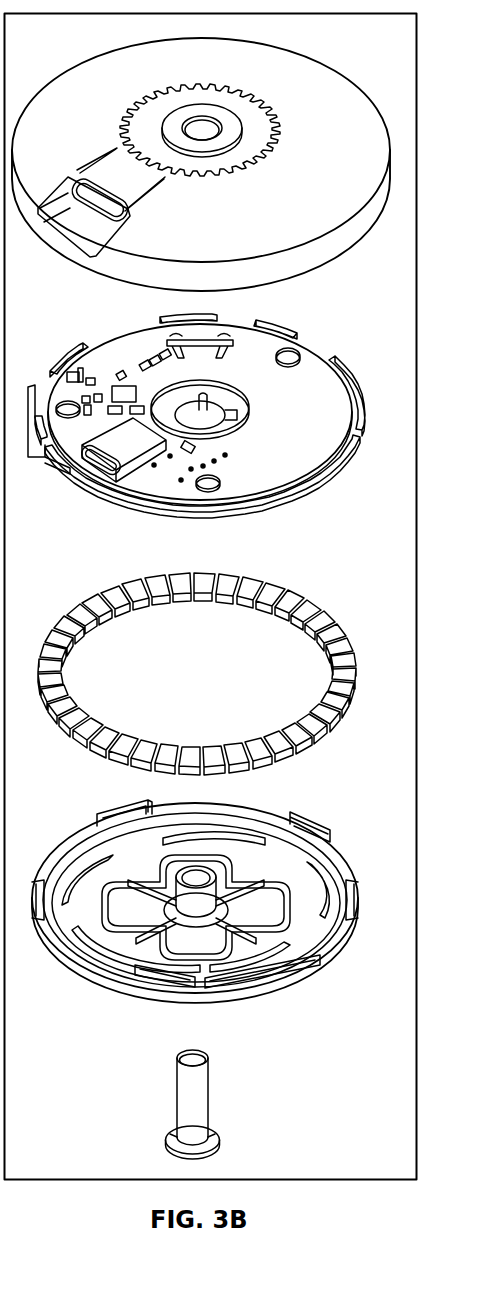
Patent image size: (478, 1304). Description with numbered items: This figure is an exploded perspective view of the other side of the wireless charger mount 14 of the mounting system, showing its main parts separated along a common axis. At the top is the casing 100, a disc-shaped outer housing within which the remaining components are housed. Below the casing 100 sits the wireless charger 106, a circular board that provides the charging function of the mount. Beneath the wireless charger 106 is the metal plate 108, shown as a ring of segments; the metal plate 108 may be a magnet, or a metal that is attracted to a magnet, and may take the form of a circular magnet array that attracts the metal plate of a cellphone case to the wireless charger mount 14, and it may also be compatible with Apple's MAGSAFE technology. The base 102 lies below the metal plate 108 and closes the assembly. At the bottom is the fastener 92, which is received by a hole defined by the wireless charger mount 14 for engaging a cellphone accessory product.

The wireless charger mount 14 is at (327, 52).
The casing 100 is at (337, 95).
The wireless charger 106 is at (310, 360).
The metal plate 108 is at (332, 630).
The base 102 is at (350, 880).
The fastener 92 is at (210, 1100).